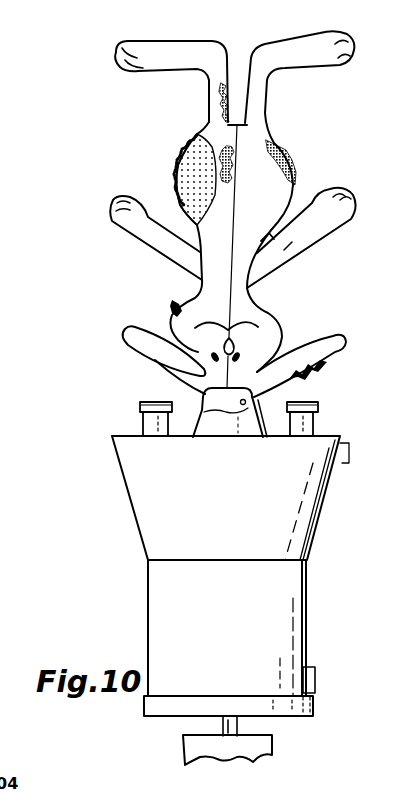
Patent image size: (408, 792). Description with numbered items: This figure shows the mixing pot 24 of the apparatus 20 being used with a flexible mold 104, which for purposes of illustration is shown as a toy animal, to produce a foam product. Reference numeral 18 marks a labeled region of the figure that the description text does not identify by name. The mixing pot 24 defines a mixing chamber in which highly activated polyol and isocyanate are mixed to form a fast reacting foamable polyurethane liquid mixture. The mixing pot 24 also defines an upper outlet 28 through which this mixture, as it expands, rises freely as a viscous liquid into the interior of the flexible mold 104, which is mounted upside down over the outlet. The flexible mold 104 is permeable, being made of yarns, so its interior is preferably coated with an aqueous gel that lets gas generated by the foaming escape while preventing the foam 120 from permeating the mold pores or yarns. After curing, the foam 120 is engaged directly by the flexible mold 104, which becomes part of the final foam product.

The rabbit figure body 18 is at (175, 156).
The foam 120 is at (190, 180).
The flexible mold 104 is at (287, 254).
The upper outlet 28 is at (258, 398).
The apparatus 20 is at (111, 498).
The mixing pot 24 is at (310, 567).